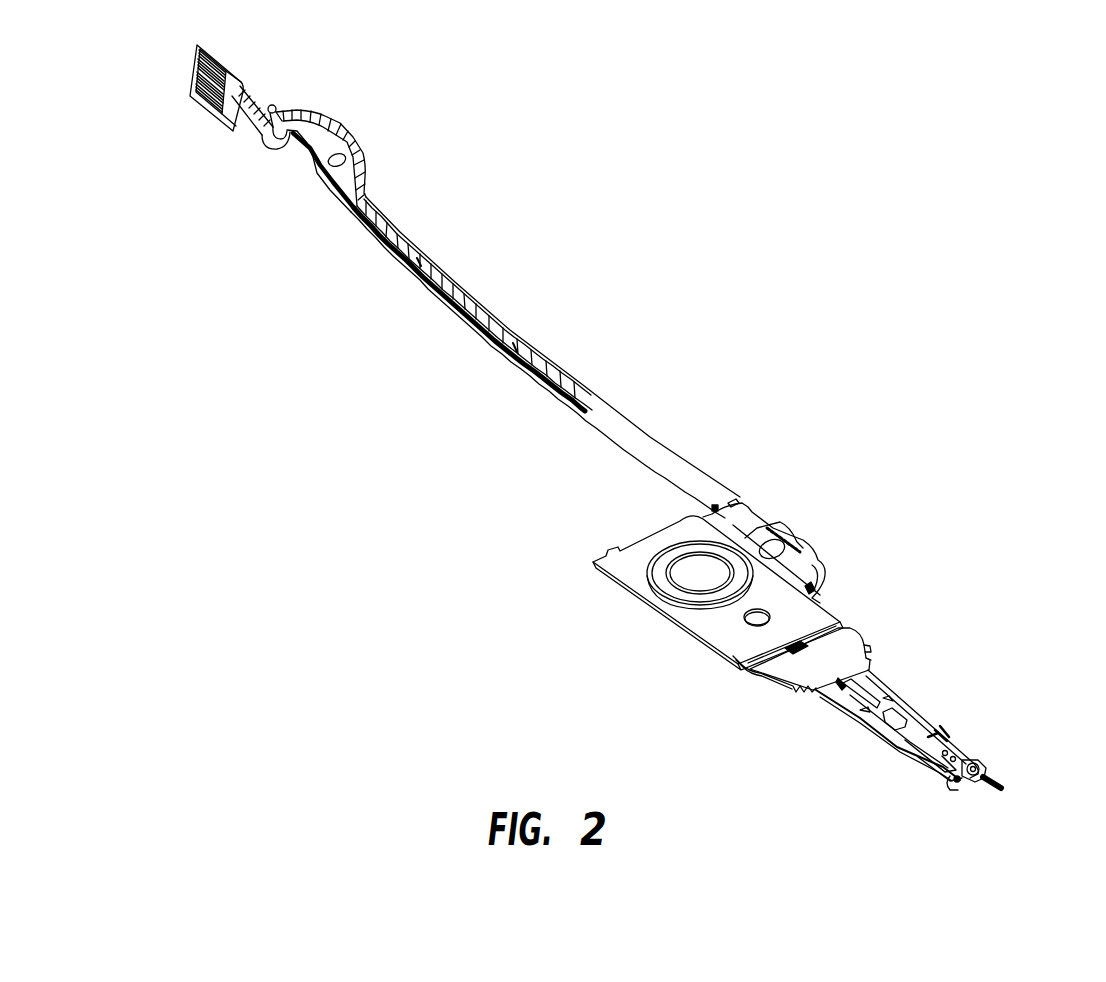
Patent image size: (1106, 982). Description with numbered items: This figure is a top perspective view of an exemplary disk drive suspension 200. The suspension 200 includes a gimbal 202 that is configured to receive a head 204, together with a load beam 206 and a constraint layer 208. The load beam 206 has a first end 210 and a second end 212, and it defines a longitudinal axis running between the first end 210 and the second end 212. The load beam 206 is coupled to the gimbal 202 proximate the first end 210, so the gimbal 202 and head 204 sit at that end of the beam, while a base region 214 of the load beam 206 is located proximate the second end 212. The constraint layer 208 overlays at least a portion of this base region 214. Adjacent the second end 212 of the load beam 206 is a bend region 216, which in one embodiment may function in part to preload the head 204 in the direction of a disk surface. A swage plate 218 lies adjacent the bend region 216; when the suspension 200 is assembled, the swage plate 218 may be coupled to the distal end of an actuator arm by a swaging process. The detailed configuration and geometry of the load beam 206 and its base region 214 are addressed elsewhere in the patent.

The suspension 200 is at (806, 432).
The gimbal 202 is at (962, 784).
The head 204 is at (927, 767).
The load beam 206 is at (900, 697).
The constraint layer 208 is at (850, 645).
The first end 210 is at (1016, 787).
The second end 212 is at (740, 681).
The base region 214 is at (785, 698).
The bend region 216 is at (853, 627).
The swage plate 218 is at (780, 533).